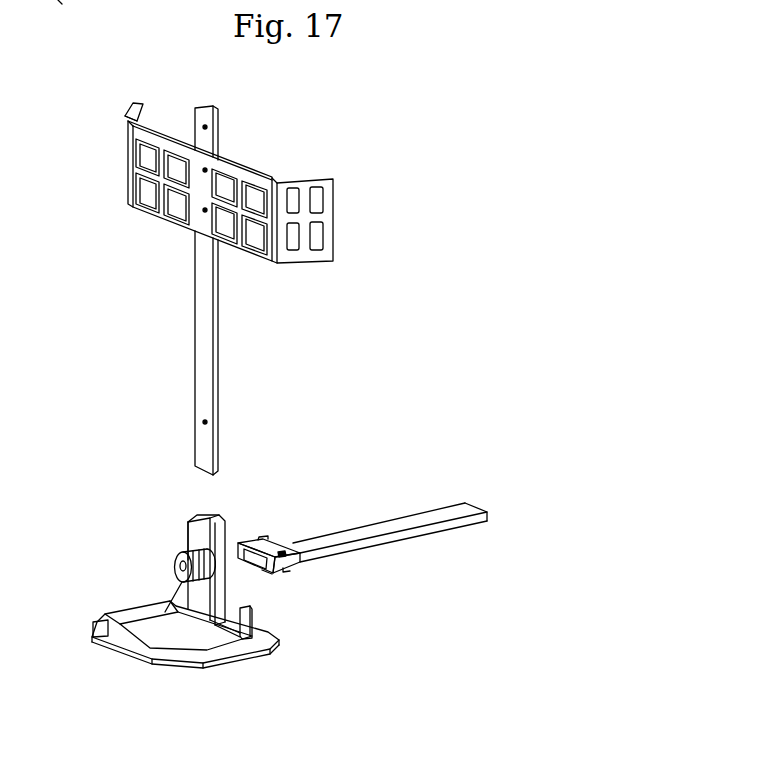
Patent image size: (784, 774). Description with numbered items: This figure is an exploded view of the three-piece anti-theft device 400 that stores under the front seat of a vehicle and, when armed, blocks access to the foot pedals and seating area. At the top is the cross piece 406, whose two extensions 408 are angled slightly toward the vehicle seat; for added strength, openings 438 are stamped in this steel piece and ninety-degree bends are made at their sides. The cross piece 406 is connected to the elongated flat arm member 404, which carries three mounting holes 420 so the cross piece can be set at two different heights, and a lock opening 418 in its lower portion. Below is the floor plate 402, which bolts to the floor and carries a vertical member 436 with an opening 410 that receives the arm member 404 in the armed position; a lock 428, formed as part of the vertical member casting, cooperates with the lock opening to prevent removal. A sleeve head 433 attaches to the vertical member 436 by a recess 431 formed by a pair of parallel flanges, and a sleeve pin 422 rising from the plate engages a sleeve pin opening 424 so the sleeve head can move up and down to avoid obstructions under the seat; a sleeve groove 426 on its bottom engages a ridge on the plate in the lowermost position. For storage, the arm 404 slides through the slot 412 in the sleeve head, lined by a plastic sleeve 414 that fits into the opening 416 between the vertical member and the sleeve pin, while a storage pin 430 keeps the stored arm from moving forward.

The anti-theft device 400 is at (62, 700).
The floor plate 402 is at (130, 610).
The arm member 404 is at (210, 362).
The cross piece 406 is at (205, 158).
The extensions 408 is at (126, 116).
The opening 410 is at (218, 523).
The slot 412 is at (268, 573).
The plastic sleeve 414 is at (383, 525).
The opening 416 is at (240, 632).
The lock opening 418 is at (207, 421).
The mounting holes 420 is at (203, 106).
The sleeve pin 422 is at (256, 648).
The sleeve pin opening 424 is at (302, 565).
The sleeve groove 426 is at (285, 570).
The lock 428 is at (177, 562).
The storage pin 430 is at (92, 633).
The recess 431 is at (253, 543).
The sleeve head 433 is at (272, 550).
The vertical member 436 is at (190, 533).
The openings 438 is at (117, 229).